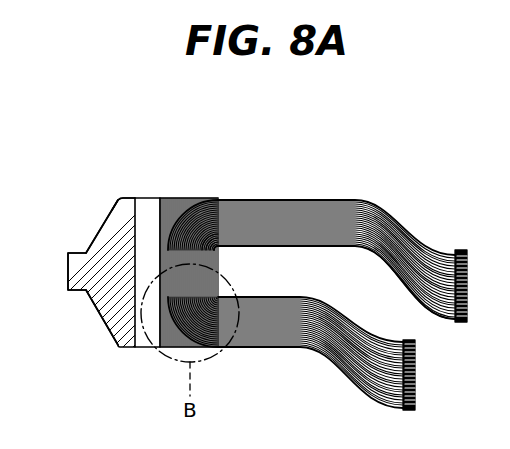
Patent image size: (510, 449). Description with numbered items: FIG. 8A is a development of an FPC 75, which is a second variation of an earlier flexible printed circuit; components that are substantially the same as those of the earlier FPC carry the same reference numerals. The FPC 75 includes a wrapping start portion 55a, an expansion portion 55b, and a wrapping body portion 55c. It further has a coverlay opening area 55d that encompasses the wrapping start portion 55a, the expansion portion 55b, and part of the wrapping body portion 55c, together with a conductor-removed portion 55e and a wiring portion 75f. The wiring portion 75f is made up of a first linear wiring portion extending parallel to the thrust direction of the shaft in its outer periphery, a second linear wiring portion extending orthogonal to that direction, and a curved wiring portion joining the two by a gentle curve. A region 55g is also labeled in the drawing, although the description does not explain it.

The wrapping start portion 55a is at (68, 263).
The expansion portion 55b is at (98, 232).
The wrapping body portion 55c is at (180, 197).
The coverlay opening area 55d is at (113, 307).
The conductor-removed portion 55e is at (146, 213).
The top corner of holder 55g is at (121, 204).
The FPC 75 is at (340, 175).
The wiring portion 75f is at (195, 257).